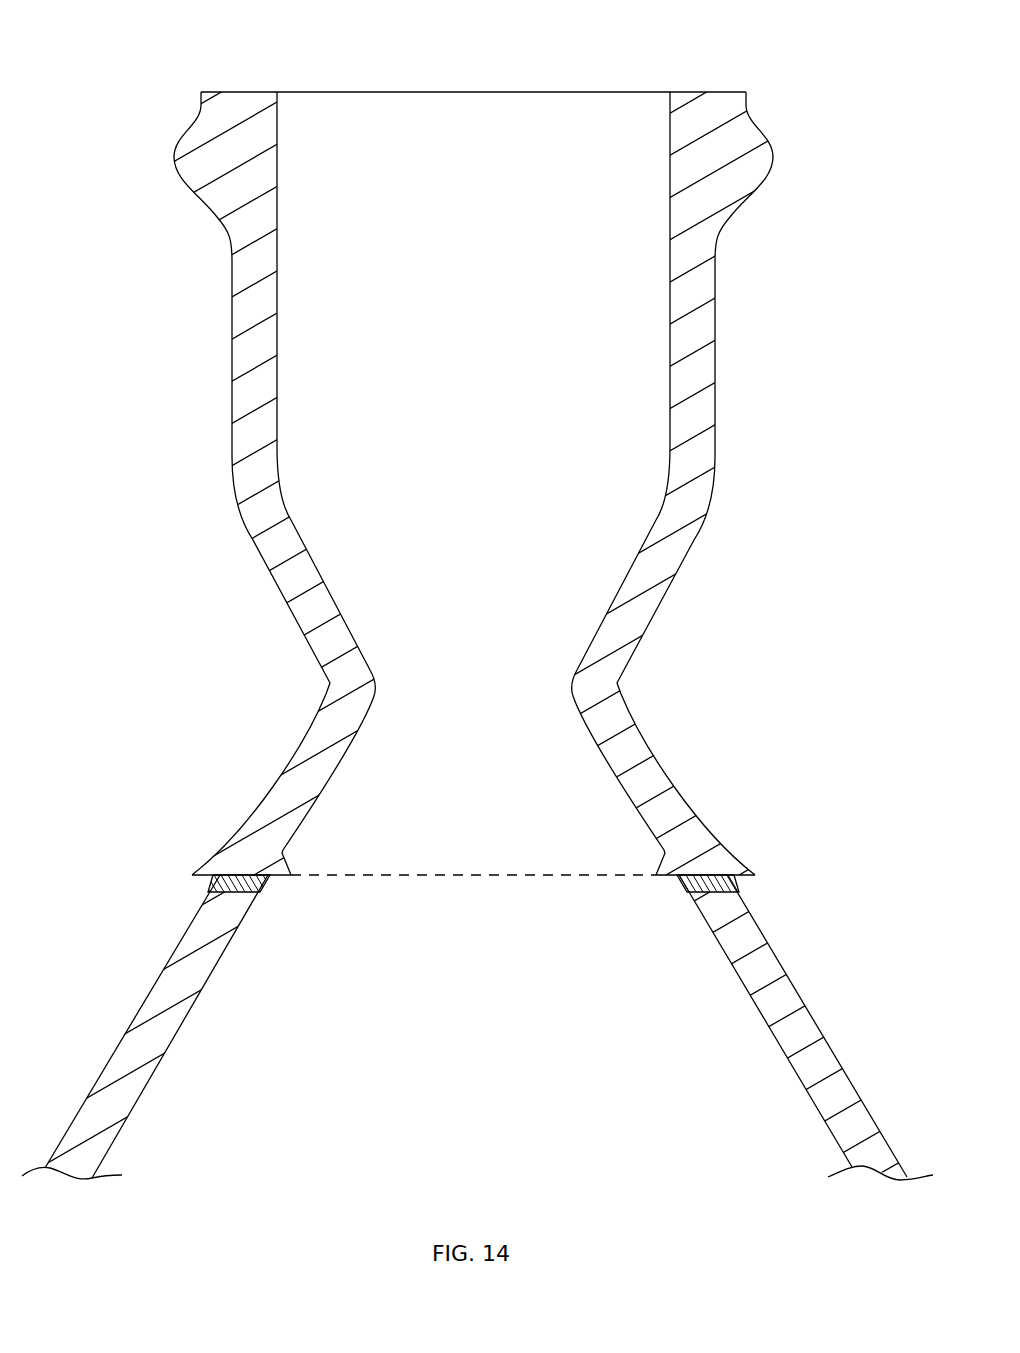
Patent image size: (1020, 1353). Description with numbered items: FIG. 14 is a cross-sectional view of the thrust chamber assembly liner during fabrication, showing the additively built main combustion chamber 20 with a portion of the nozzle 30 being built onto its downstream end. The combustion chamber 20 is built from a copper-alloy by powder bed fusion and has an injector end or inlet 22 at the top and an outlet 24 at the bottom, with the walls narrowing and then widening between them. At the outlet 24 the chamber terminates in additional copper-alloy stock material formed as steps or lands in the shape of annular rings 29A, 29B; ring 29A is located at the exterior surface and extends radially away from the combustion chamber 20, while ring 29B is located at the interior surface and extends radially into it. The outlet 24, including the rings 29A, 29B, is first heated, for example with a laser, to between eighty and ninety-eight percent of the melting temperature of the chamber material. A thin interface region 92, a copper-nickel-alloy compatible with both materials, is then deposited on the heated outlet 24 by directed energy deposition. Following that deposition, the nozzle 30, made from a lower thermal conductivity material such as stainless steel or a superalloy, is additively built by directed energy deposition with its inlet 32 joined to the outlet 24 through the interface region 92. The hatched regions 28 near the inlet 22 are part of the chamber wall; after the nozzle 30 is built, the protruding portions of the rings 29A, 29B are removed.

The main combustion chamber 20 is at (490, 676).
The inlet 22 is at (488, 92).
The outlet 24 is at (477, 873).
The flange bead 28 is at (752, 165).
The annular ring 29A is at (212, 866).
The annular ring 29B is at (286, 855).
The nozzle 30 is at (876, 1050).
The inlet 32 is at (348, 880).
The interface region 92 is at (212, 891).